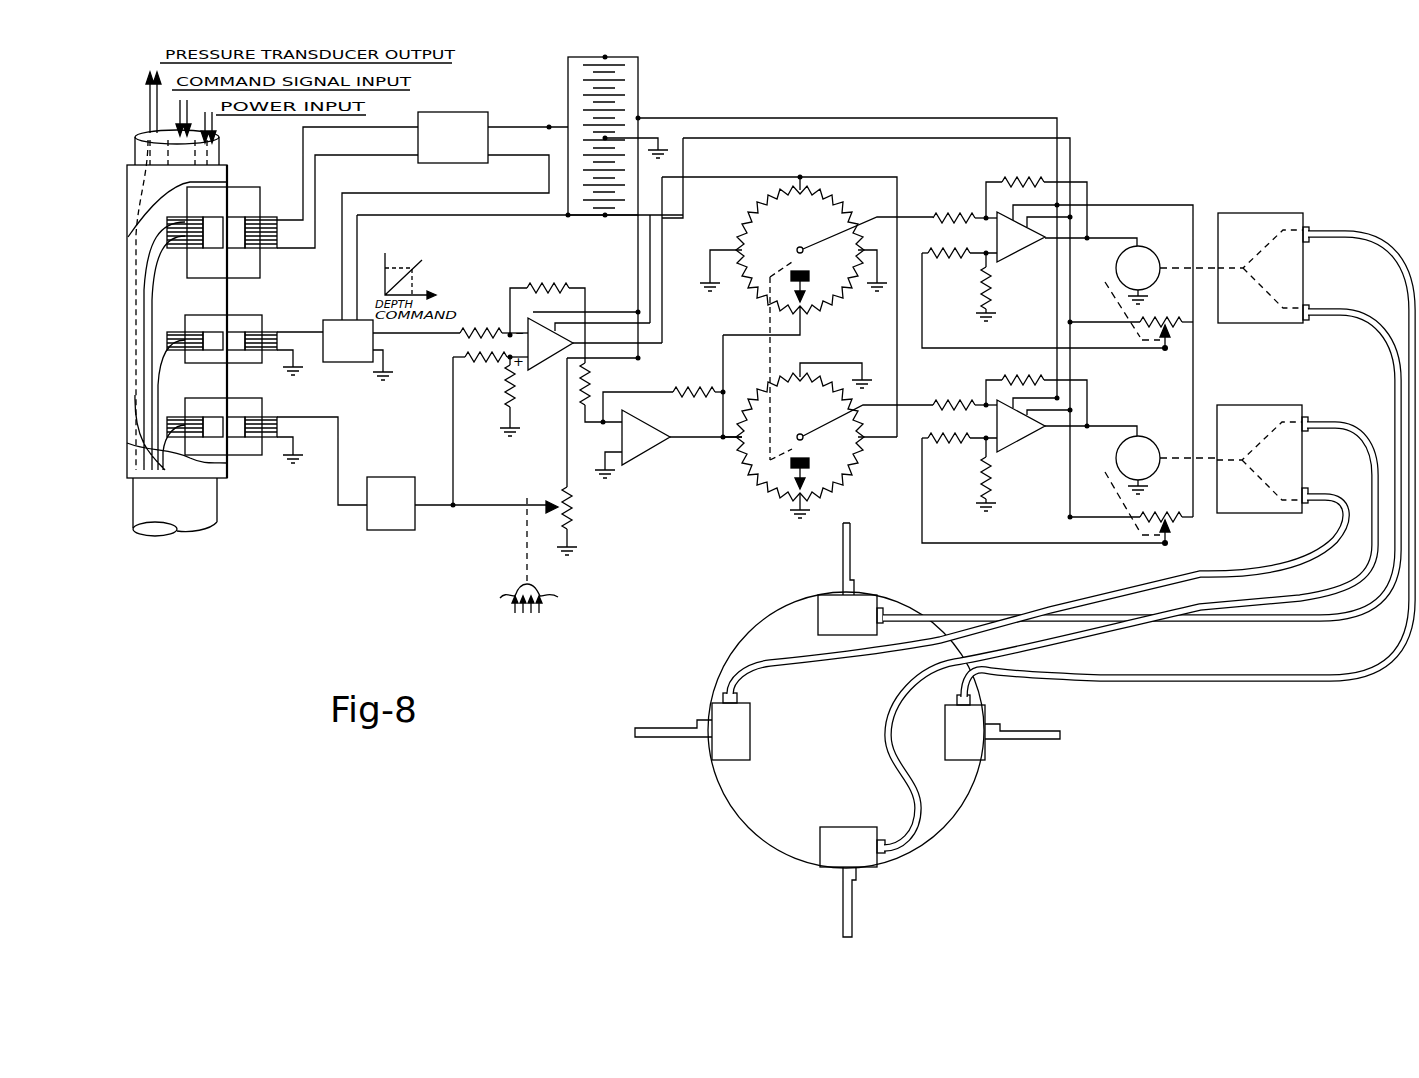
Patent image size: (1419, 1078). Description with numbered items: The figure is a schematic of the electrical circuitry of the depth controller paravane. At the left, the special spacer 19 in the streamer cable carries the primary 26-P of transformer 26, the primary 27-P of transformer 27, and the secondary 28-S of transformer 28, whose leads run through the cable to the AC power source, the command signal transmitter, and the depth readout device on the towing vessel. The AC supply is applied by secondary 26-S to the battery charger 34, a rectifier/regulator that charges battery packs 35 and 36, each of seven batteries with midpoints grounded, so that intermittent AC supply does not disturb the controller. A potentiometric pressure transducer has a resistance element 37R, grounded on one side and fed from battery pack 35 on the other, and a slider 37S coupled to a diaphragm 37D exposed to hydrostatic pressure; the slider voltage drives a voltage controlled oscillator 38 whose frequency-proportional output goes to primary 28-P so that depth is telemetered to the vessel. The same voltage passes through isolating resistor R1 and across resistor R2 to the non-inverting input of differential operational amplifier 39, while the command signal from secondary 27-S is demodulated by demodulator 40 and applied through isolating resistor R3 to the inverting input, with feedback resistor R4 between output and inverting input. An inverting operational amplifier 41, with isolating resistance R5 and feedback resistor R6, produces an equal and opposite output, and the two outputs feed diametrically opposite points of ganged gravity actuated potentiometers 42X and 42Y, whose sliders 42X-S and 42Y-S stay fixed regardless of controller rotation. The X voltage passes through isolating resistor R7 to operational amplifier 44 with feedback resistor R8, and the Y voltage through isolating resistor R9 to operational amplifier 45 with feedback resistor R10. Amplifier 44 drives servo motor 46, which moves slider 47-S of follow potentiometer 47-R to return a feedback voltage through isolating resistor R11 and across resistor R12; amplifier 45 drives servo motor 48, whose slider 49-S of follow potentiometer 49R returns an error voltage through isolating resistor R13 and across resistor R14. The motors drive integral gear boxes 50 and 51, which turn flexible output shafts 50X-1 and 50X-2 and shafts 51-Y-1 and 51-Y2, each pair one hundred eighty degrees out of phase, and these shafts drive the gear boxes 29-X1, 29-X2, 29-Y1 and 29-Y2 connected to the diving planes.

The special spacer 19 is at (168, 520).
The transformer 26 is at (236, 182).
The secondary winding of transformer 26 26-S is at (260, 203).
The primary winding and primary core section of transformer 26 26-P is at (178, 252).
The transformer 27 is at (210, 309).
The secondary winding of transformer 27 27-S is at (262, 318).
The primary winding and primary core section of transformer 27 27-P is at (178, 352).
The transformer 28 is at (237, 460).
The secondary winding and secondary core section of transformer 28 28-S is at (175, 440).
The primary winding of transformer 28 28-P is at (262, 457).
The battery charger 34 is at (463, 112).
The battery pack 35 is at (633, 88).
The battery pack 36 is at (628, 208).
The slider 37S is at (552, 503).
The electrical resistance element 37R is at (580, 528).
The diaphragm 37D is at (509, 555).
The voltage controlled oscillator 38 is at (397, 483).
The differential operational amplifier 39 is at (532, 320).
The demodulator 40 is at (355, 365).
The inverting operational amplifier 41 is at (640, 452).
The gravity actuated potentiometer 42X is at (776, 206).
The slider of potentiometer 42X 42X-S is at (810, 286).
The gravity actuated potentiometer 42Y is at (758, 472).
The slider of potentiometer 42Y 42Y-S is at (812, 470).
The operational amplifier 44 is at (1012, 252).
The operational amplifier 45 is at (1016, 446).
The servo motor 46 is at (1168, 235).
The follow potentiometer 47-R is at (1131, 310).
The slider of follow potentiometer 47R 47-S is at (1158, 333).
The servo motor 48 is at (1168, 427).
The follow potentiometer 49R is at (1131, 507).
The slider of follow potentiometer 49R 49-S is at (1170, 530).
The gear box 50 is at (1268, 212).
The flexible output shaft 50X-1 is at (1360, 248).
The flexible output shaft 50X-2 is at (1356, 318).
The gear box 51 is at (1247, 405).
The flexible output shaft 51-Y-1 is at (1342, 430).
The flexible output shaft 51-Y2 is at (1337, 504).
The gear box 29-Y2 is at (842, 630).
The gear box 29-X2 is at (742, 735).
The gear box 29-X1 is at (947, 748).
The gear box 29-Y1 is at (866, 828).
The isolating resistor R1 is at (490, 368).
The resistor R2 is at (520, 396).
The isolating resistor R3 is at (450, 322).
The feedback resistor R4 is at (547, 309).
The isolating resistance R5 is at (601, 392).
The feedback resistor R6 is at (663, 392).
The isolating resistor R7 is at (962, 207).
The feedback resistor R8 is at (1036, 198).
The isolating resistor R9 is at (965, 395).
The feedback resistor R10 is at (1036, 392).
The isolating resistor R11 is at (1043, 289).
The resistor R12 is at (1002, 287).
The isolating resistor R13 is at (1043, 488).
The resistor R14 is at (1003, 474).